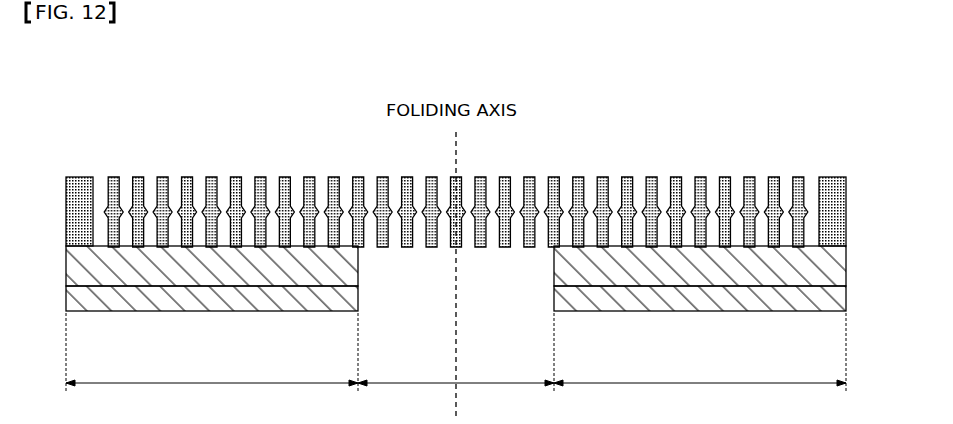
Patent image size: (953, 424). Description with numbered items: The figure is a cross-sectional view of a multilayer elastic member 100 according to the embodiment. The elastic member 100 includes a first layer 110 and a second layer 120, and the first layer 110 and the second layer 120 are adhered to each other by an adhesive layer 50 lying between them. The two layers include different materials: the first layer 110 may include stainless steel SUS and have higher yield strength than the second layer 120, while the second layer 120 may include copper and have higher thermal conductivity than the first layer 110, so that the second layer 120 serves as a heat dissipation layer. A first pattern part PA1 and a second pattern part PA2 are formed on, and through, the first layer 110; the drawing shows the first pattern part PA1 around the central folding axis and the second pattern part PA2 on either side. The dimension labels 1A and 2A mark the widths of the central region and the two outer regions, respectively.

The elastic member 100 is at (503, 244).
The first layer 110 is at (847, 210).
The adhesive layer 50 is at (847, 264).
The second layer 120 is at (477, 298).
The first pattern part PA1 is at (490, 197).
The second pattern part PA2 is at (198, 192).
The folding area width 1A is at (456, 394).
The non-folding area width 2A is at (456, 395).